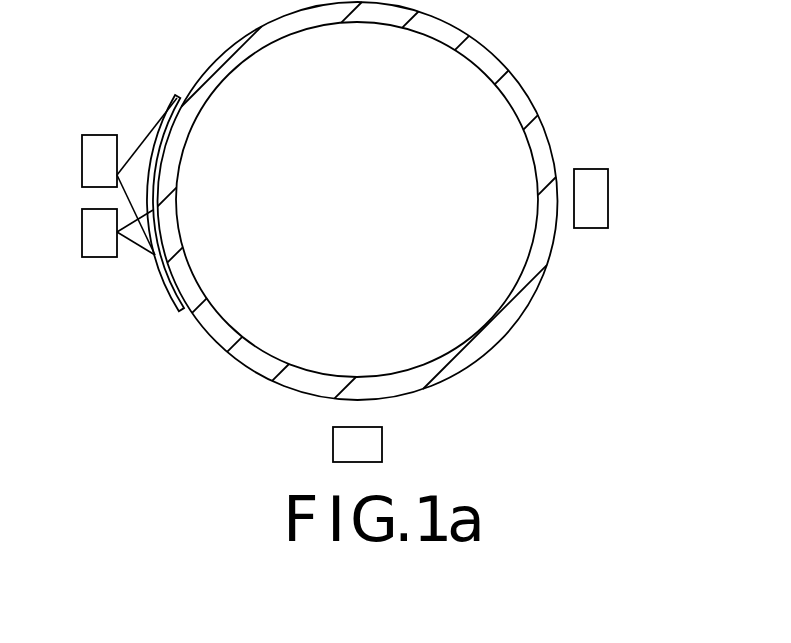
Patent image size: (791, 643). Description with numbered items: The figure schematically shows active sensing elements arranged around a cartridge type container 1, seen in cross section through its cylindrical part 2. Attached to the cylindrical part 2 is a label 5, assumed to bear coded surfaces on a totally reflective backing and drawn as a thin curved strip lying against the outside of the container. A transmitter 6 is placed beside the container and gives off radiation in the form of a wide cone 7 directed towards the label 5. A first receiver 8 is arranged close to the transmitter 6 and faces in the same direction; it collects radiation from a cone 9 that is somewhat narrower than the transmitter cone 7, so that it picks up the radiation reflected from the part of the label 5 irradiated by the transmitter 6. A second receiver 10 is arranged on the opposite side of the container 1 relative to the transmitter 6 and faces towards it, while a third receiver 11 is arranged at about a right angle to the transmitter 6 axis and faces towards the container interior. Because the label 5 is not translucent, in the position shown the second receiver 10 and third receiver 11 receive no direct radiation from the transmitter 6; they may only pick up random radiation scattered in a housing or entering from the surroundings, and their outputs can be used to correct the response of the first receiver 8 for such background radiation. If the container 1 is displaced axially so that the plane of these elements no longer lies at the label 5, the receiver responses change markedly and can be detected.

The cartridge type container 1 is at (527, 67).
The cylindrical part 2 is at (541, 132).
The label 5 is at (172, 303).
The transmitter 6 is at (92, 158).
The wide cone 7 is at (141, 162).
The first receiver 8 is at (92, 232).
The cone 9 is at (133, 233).
The second receiver 10 is at (592, 182).
The third receiver 11 is at (375, 443).